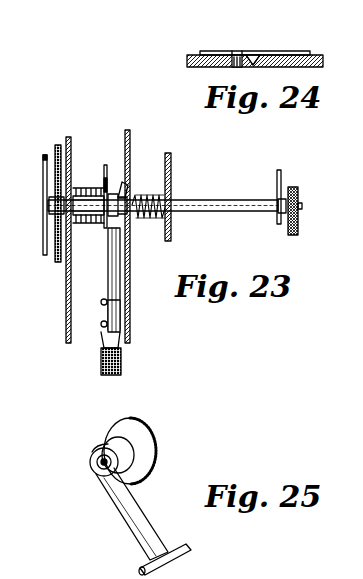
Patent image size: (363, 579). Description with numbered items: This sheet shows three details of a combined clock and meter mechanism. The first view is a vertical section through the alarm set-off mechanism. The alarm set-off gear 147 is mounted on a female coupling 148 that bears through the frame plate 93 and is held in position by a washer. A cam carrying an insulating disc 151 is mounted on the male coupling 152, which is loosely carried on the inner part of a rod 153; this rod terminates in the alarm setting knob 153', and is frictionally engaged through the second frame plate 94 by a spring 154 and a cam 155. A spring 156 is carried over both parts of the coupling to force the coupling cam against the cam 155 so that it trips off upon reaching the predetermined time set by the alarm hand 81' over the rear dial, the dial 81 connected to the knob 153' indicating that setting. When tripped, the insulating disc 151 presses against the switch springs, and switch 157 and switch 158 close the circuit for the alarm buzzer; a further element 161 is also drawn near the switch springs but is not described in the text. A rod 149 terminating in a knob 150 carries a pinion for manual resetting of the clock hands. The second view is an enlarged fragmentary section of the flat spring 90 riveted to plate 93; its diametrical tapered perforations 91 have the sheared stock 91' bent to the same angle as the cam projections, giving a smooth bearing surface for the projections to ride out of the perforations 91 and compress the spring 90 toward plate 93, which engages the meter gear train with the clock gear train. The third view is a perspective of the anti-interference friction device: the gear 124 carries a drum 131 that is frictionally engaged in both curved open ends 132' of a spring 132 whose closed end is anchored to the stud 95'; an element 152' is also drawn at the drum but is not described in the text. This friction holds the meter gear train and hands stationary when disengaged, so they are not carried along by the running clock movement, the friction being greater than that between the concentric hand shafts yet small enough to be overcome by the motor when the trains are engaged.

In FIG. 24, the flat spring 90 is at (205, 53).
In FIG. 24, the tapered perforations 91 is at (261, 42).
In FIG. 24, the sheared stock 91' is at (233, 43).
In FIG. 24, the frame plate 93 is at (204, 66).
In FIG. 23, the frame plate 93 is at (77, 196).
In FIG. 23, the frame plate 94 is at (131, 140).
In FIG. 23, the dial 81 is at (27, 205).
In FIG. 23, the alarm hand 81' is at (297, 193).
In FIG. 23, the alarm set-off gear 147 is at (57, 148).
In FIG. 23, the female coupling 148 is at (88, 188).
In FIG. 23, the rod 149 is at (80, 188).
In FIG. 23, the knob 150 is at (113, 194).
In FIG. 23, the insulating disc 151 is at (106, 165).
In FIG. 23, the male coupling 152 is at (89, 223).
In FIG. 23, the rod 153 is at (163, 223).
In FIG. 23, the alarm setting knob 153' is at (318, 211).
In FIG. 23, the spring 154 is at (146, 220).
In FIG. 23, the cam 155 is at (128, 184).
In FIG. 23, the spring 156 is at (66, 248).
In FIG. 23, the switch spring 157 is at (110, 262).
In FIG. 23, the switch 158 is at (124, 305).
In FIG. 23, the knobs 161 is at (101, 325).
In FIG. 25, the gear 124 is at (150, 446).
In FIG. 25, the drum 131 is at (90, 462).
In FIG. 25, the spring 132 is at (128, 514).
In FIG. 25, the spring open ends 132' is at (83, 471).
In FIG. 25, the boss 152' is at (151, 455).
In FIG. 25, the pillar 95' is at (146, 559).